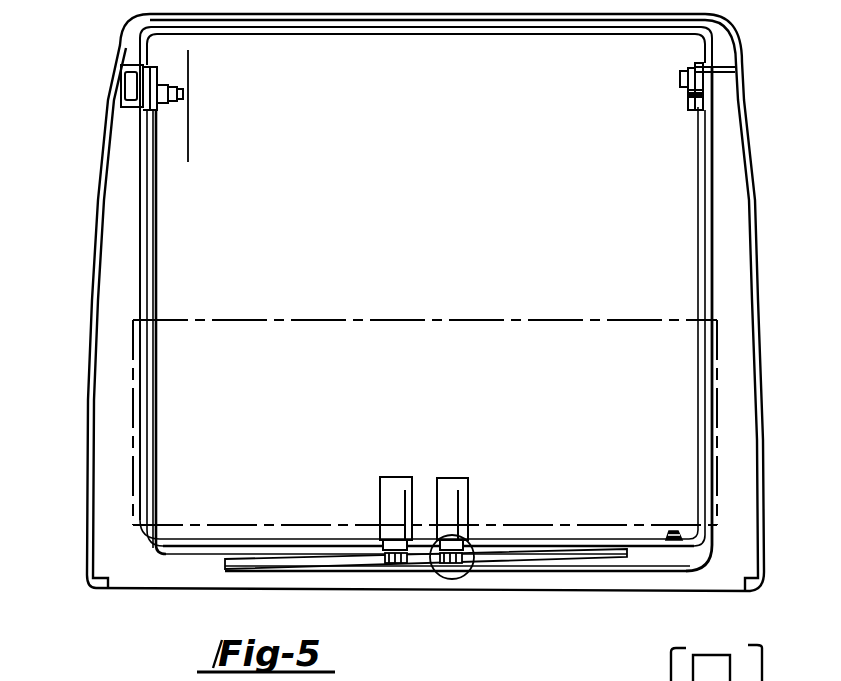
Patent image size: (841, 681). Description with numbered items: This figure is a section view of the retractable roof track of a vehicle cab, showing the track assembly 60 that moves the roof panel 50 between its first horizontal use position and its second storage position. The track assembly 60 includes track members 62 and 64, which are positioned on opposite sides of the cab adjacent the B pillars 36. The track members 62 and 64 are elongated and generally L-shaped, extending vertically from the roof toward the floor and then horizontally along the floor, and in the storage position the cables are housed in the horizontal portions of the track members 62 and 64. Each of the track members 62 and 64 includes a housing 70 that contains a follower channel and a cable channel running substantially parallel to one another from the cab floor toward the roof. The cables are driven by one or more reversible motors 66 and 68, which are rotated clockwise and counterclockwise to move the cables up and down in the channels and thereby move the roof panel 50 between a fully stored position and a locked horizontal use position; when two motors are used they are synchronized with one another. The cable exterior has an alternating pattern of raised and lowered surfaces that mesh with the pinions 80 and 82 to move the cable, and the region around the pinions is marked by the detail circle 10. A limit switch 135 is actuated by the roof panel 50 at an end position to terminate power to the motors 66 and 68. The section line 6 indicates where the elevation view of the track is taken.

The B pillar 36 is at (97, 168).
The track member 62 is at (156, 268).
The track member 64 is at (697, 190).
The housing 70 is at (150, 432).
The roof panel 50 is at (428, 318).
The track assembly 60 is at (547, 535).
The motor 66 is at (379, 498).
The motor 68 is at (463, 479).
The pinion 80 is at (397, 564).
The pinion 82 is at (448, 566).
The detail circle 10 is at (465, 578).
The limit switch 135 is at (672, 531).
The section line 6- 6 is at (190, 60).